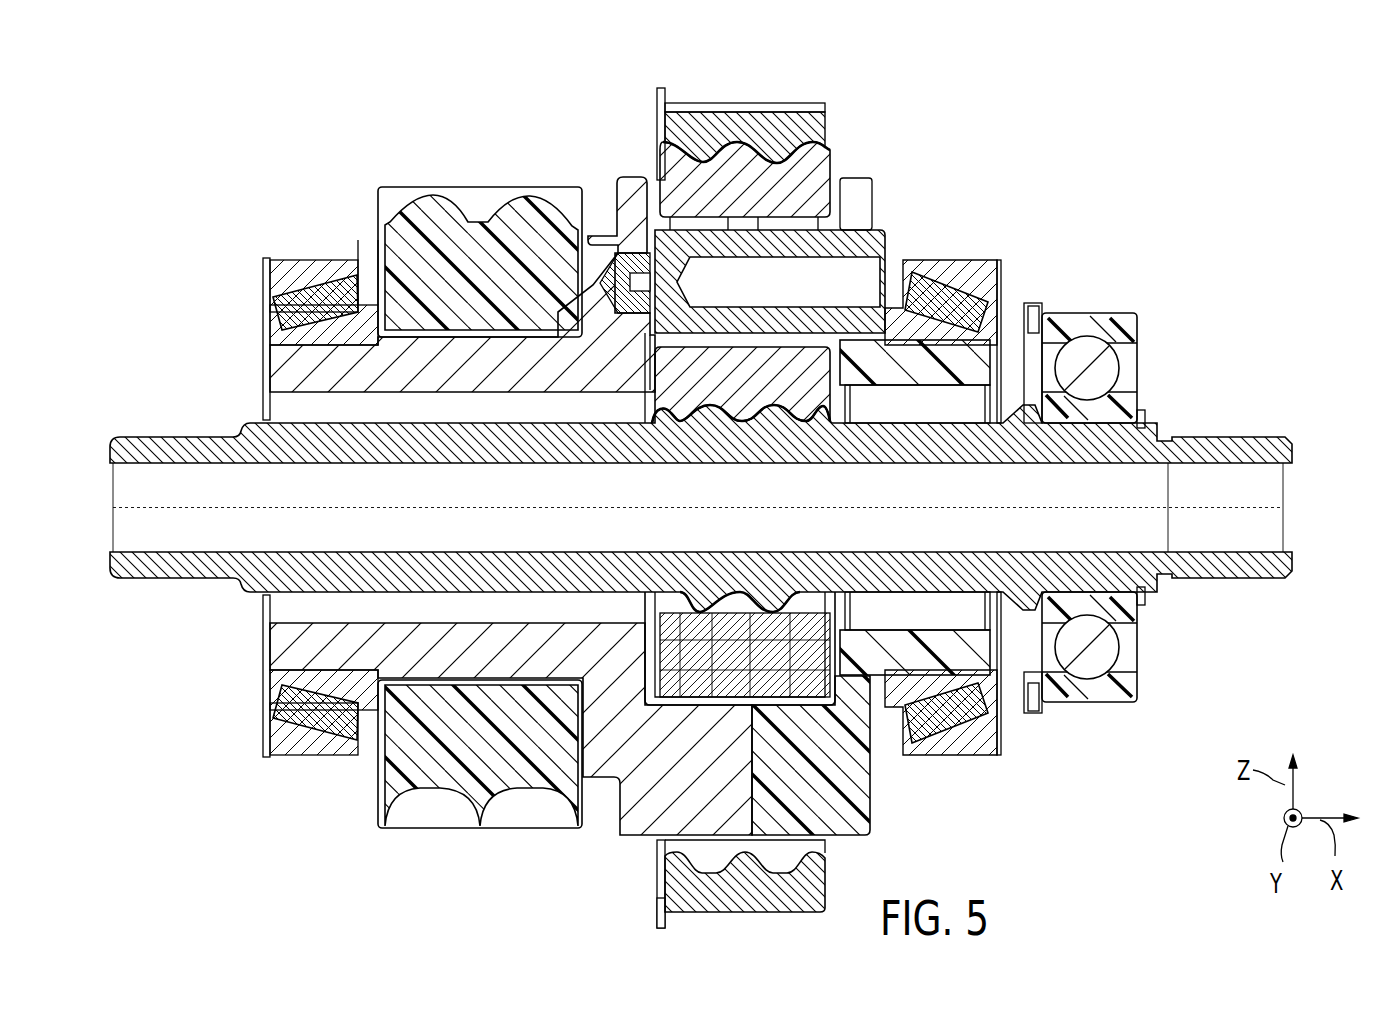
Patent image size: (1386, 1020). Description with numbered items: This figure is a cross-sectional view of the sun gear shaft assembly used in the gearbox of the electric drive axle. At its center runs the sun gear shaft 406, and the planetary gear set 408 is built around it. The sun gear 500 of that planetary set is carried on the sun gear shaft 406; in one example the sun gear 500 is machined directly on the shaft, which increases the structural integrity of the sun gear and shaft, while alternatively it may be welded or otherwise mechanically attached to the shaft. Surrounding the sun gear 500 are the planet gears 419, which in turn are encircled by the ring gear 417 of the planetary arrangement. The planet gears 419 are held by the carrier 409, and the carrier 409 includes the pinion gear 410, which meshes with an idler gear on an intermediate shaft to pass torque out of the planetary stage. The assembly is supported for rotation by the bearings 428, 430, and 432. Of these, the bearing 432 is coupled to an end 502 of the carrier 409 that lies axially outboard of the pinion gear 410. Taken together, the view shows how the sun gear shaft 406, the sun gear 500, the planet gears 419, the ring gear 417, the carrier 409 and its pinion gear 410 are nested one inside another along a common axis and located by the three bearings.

The sun gear shaft 406 is at (1277, 446).
The planetary gear set 408 is at (606, 98).
The carrier 409 is at (624, 228).
The pinion gear 410 is at (432, 200).
The ring gear 417 is at (776, 128).
The planet gears 419 is at (812, 170).
The bearing 428 is at (1110, 325).
The bearing 430 is at (978, 275).
The bearing 432 is at (292, 268).
The sun gear 500 is at (700, 452).
The end of the carrier 502 is at (252, 366).